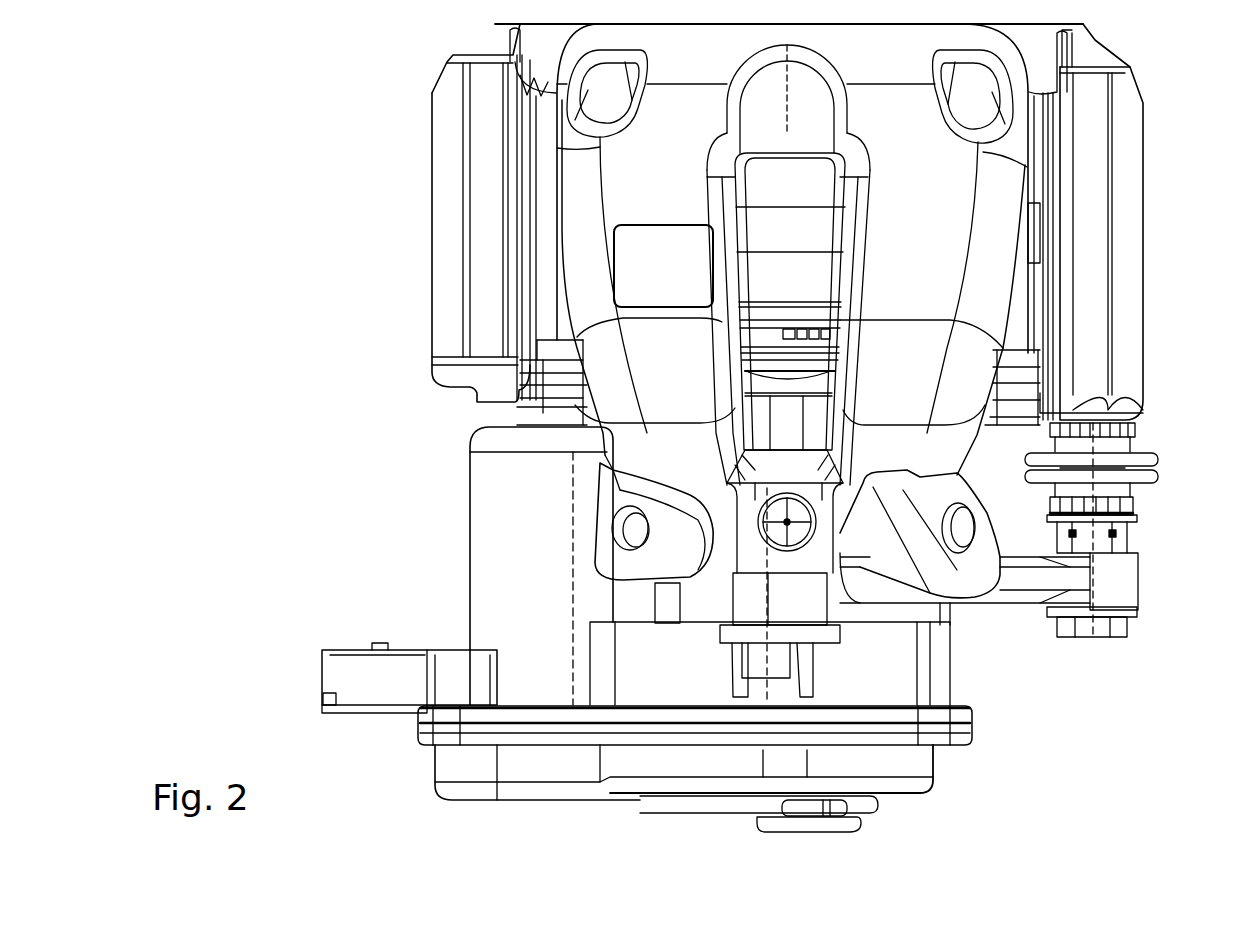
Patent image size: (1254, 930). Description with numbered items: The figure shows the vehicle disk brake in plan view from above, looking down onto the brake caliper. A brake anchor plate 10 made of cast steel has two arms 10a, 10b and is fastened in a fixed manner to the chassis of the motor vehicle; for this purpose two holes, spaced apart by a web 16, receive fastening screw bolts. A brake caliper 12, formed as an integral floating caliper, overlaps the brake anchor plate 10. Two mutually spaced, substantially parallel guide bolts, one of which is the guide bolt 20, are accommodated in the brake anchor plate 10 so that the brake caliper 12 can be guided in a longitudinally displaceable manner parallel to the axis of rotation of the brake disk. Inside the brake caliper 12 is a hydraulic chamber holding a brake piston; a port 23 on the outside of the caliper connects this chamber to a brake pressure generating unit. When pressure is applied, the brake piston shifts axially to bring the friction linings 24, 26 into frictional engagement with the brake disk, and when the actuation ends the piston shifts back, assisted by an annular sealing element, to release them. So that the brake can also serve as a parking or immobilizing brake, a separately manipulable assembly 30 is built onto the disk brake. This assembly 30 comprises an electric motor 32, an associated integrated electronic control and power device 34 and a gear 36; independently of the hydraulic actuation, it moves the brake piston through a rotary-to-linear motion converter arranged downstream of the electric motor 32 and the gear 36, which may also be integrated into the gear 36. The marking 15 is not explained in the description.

The brake anchor plate 10 is at (1172, 198).
The arm 10a is at (1122, 322).
The arm 10b is at (449, 191).
The brake caliper 12 is at (925, 251).
The spindle 15 is at (785, 452).
The web 16 is at (786, 422).
The guide bolt 20 is at (1085, 627).
The port 23 is at (800, 527).
The friction lining 24 is at (778, 275).
The friction lining 26 is at (803, 185).
The assembly 30 is at (936, 806).
The electric motor 32 is at (508, 547).
The integrated electronic control and power device 34 is at (447, 765).
The gear 36 is at (700, 774).